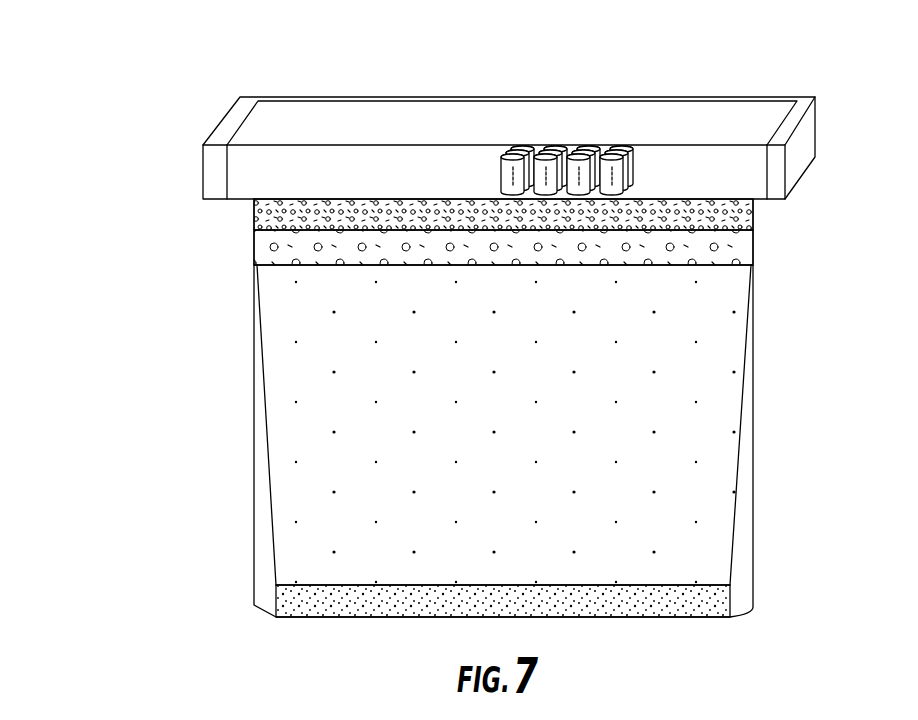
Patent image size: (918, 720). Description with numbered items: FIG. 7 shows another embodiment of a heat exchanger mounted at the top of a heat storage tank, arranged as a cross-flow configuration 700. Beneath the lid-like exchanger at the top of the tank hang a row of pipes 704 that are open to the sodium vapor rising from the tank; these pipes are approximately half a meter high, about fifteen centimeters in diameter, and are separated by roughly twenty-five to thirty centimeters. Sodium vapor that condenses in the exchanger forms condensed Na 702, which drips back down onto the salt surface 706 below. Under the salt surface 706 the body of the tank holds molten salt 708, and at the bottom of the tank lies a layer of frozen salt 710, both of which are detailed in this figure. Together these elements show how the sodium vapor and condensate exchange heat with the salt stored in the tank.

The cross-flow configuration 700 is at (437, 309).
The condensed Na 702 is at (289, 222).
The pipes 704 is at (497, 176).
The salt surface 706 is at (329, 254).
The molten salt 708 is at (302, 448).
The frozen salt 710 is at (296, 597).